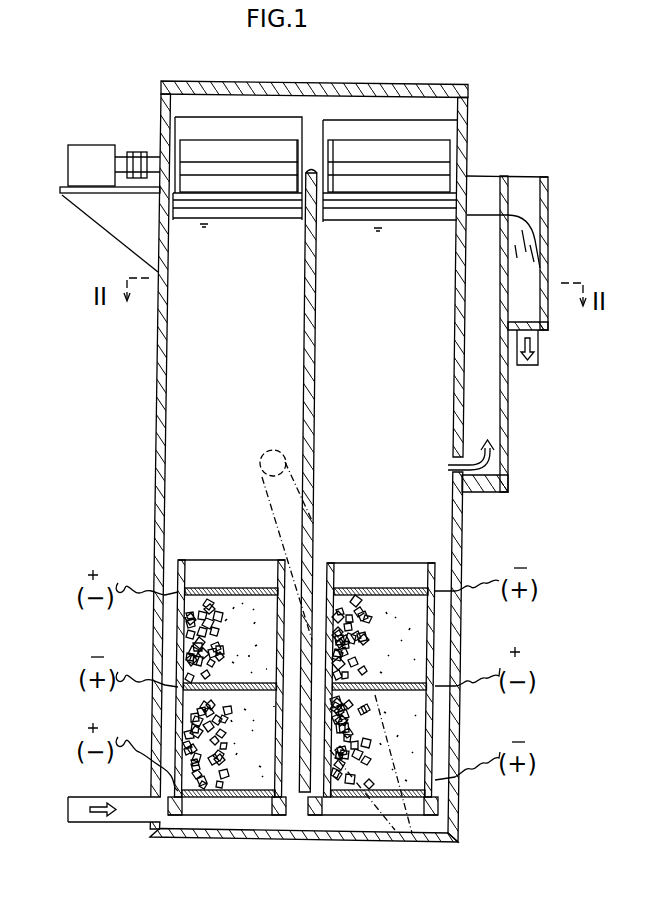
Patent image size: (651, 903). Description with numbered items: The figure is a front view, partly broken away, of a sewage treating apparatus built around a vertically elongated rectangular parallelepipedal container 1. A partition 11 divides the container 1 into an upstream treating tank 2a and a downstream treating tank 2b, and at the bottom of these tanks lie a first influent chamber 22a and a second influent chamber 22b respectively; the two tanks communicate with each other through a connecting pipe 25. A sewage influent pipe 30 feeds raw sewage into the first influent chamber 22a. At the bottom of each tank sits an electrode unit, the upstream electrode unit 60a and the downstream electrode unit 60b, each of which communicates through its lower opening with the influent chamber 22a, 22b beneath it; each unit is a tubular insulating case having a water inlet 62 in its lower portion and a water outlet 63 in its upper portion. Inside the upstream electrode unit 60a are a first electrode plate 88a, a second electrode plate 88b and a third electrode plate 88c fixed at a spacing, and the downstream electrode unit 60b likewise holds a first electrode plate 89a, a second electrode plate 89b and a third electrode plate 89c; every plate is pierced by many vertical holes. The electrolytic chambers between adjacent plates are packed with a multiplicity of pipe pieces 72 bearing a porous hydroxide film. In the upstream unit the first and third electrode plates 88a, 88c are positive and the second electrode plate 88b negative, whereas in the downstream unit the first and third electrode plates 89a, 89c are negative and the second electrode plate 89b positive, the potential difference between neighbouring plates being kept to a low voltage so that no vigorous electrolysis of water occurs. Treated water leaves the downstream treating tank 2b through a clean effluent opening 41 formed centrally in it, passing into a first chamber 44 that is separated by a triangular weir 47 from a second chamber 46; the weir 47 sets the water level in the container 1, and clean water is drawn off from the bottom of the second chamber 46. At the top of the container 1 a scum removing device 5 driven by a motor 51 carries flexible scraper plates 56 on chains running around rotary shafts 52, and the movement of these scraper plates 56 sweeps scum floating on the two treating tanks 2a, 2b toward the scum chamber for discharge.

The container 1 is at (157, 432).
The upstream treating tank 2a is at (196, 330).
The downstream treating tank 2b is at (440, 277).
The scum removing device 5 is at (266, 106).
The partition 11 is at (316, 320).
The first influent chamber 22a is at (225, 818).
The second influent chamber 22b is at (369, 820).
The connecting pipe 25 is at (283, 532).
The sewage influent pipe 30 is at (83, 796).
The clean effluent opening 41 is at (462, 482).
The first chamber 44 is at (492, 380).
The second chamber 46 is at (546, 314).
The triangular weir 47 is at (495, 177).
The motor 51 is at (86, 152).
The rotary shaft 52 is at (232, 170).
The scraper plate 56 is at (210, 127).
The upstream electrode unit 60a is at (230, 651).
The downstream electrode unit 60b is at (382, 667).
The water inlet 62 is at (259, 818).
The water outlet 63 is at (232, 545).
The pipe piece 72 is at (192, 628).
The first electrode plate 88a is at (229, 767).
The second electrode plate 88b is at (231, 668).
The third electrode plate 88c is at (231, 584).
The first electrode plate 89a is at (385, 752).
The second electrode plate 89b is at (384, 665).
The third electrode plate 89c is at (381, 587).